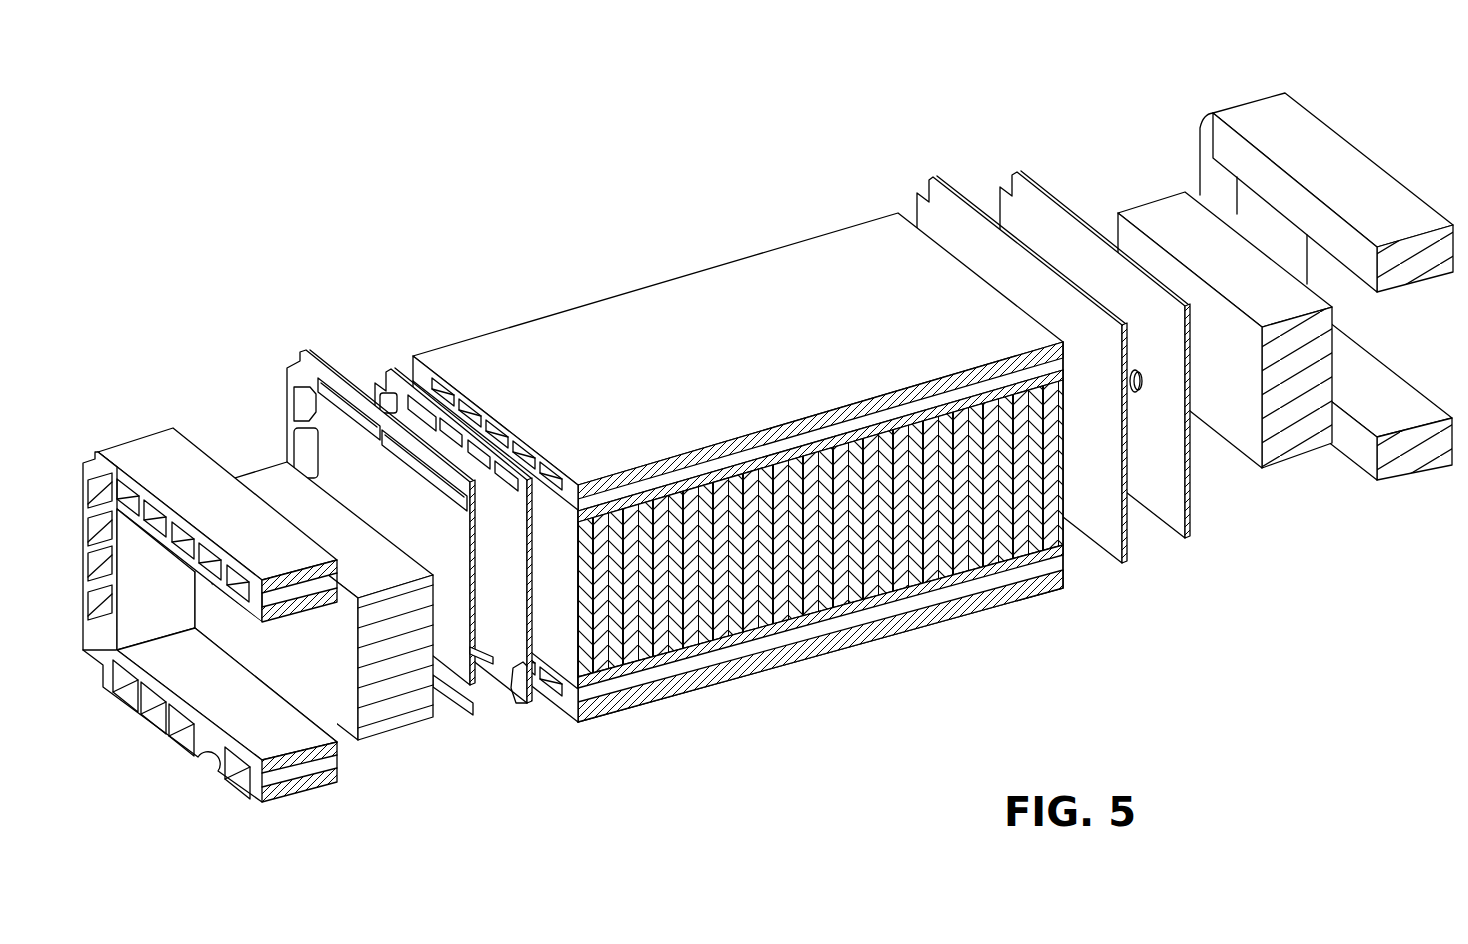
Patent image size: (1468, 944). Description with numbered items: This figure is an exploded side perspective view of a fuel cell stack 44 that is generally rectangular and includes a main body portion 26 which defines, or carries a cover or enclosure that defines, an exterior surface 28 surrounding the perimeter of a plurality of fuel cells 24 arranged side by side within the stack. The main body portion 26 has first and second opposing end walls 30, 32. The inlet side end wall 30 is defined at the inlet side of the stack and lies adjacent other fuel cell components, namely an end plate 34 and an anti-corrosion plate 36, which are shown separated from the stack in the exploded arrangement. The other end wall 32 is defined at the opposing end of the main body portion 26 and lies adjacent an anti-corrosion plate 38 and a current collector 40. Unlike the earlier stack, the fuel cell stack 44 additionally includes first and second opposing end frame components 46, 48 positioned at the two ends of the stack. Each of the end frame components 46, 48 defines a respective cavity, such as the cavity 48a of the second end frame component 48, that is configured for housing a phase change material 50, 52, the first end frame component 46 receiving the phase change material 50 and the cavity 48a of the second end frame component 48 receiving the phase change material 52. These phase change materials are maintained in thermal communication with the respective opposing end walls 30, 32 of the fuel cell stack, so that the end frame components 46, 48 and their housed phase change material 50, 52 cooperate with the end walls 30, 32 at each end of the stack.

The fuel cells 24 is at (962, 530).
The main body portion 26 is at (623, 312).
The exterior surface 28 is at (739, 390).
The inlet side end wall 30 is at (406, 343).
The end wall 32 is at (887, 207).
The end plate 34 is at (292, 362).
The anti-corrosion plate 36 is at (500, 692).
The anti-corrosion plate 38 is at (1107, 562).
The current collector 40 is at (1188, 508).
The fuel cell stack 44 is at (1060, 122).
The first end frame component 46 is at (218, 700).
The second end frame component 48 is at (1333, 158).
The cavity 48a is at (1395, 402).
The phase change material 50 is at (390, 716).
The phase change material 52 is at (1160, 208).